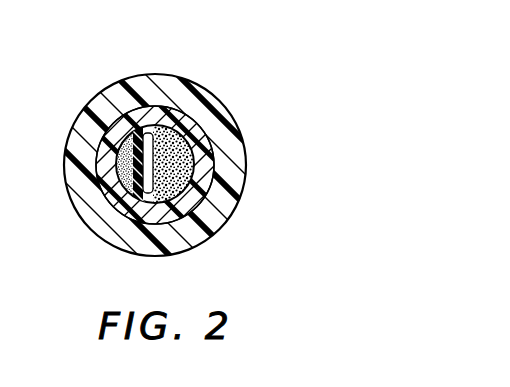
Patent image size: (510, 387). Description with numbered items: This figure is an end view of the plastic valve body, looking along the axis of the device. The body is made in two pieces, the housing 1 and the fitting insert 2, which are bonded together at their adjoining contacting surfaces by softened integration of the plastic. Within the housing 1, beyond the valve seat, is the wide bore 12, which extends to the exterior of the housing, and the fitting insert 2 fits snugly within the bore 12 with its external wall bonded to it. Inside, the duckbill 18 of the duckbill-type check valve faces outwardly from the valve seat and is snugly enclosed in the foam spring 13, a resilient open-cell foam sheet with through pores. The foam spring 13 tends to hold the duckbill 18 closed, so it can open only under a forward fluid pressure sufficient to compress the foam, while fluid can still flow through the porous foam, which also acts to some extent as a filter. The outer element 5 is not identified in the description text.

The housing 1 is at (168, 61).
The fitting insert 2 is at (200, 134).
The outer jacket 5 is at (80, 143).
The wide bore 12 is at (92, 170).
The foam spring 13 is at (193, 167).
The duckbill 18 is at (128, 186).